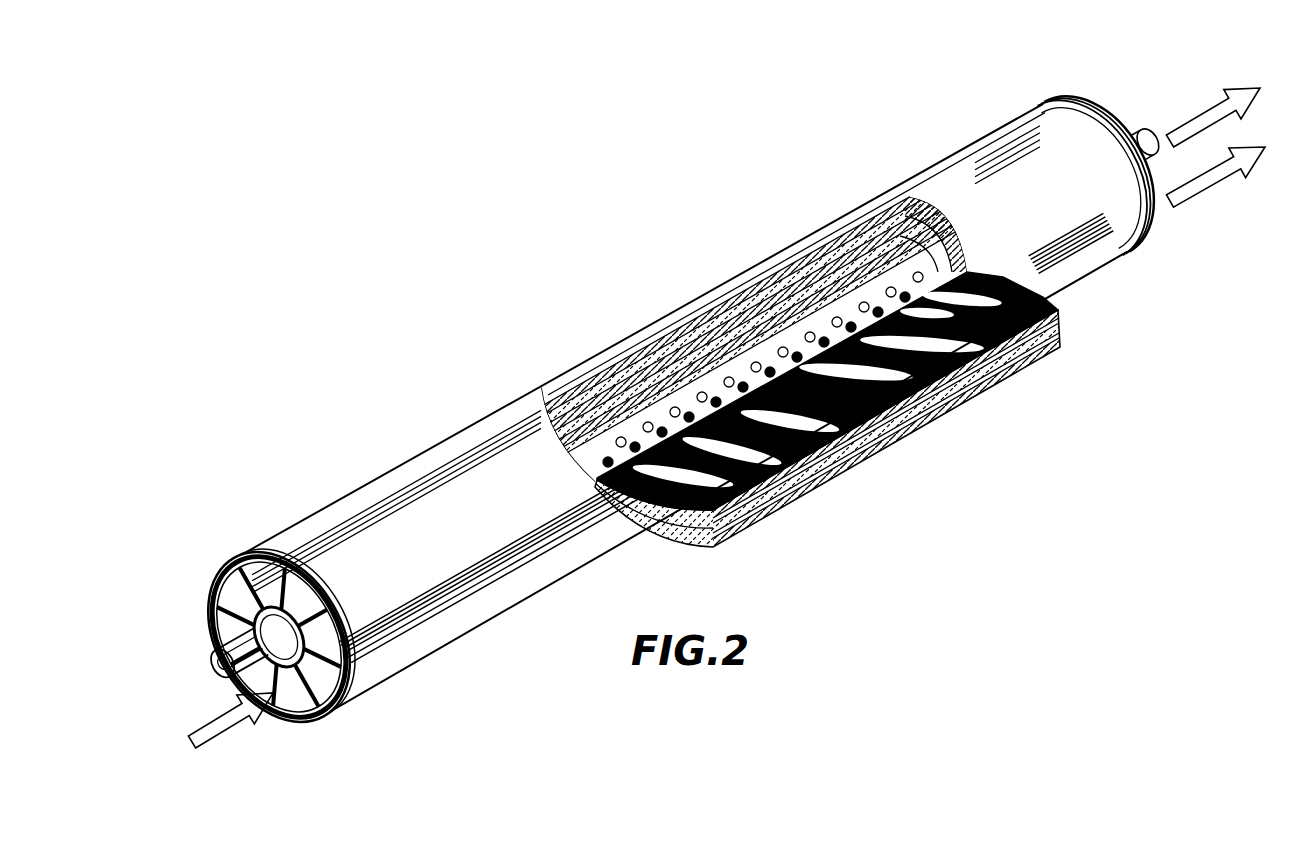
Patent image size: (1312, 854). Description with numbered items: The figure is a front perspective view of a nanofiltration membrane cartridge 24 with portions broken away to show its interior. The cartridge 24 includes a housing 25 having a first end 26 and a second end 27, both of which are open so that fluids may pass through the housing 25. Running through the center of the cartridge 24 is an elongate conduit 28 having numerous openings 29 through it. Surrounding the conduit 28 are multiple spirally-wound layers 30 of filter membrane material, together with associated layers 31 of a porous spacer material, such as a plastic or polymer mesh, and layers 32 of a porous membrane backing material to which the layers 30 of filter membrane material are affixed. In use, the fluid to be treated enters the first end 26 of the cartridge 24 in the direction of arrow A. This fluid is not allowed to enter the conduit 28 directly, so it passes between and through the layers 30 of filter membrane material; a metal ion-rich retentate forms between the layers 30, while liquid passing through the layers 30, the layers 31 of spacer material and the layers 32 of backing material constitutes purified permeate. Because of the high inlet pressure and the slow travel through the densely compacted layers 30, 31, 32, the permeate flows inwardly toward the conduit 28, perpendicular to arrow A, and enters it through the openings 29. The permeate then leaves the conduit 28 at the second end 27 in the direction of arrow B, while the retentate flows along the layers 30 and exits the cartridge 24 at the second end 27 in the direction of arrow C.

The elongate cartridge 24 is at (381, 472).
The housing 25 is at (465, 474).
The first end 26 is at (282, 552).
The second end 27 is at (1042, 101).
The elongate conduit 28 is at (213, 655).
The openings 29 is at (600, 445).
The spirally-wound layers of filter membrane material 30 is at (748, 323).
The layers of porous spacer material 31 is at (800, 283).
The layers of porous membrane backing material 32 is at (877, 443).
The arrow A is at (204, 740).
The arrow B is at (1230, 97).
The arrow C is at (1233, 177).